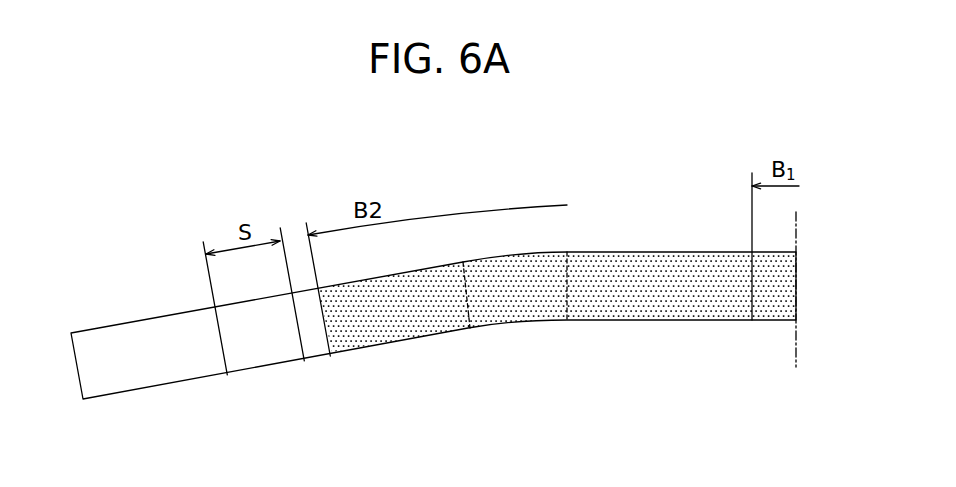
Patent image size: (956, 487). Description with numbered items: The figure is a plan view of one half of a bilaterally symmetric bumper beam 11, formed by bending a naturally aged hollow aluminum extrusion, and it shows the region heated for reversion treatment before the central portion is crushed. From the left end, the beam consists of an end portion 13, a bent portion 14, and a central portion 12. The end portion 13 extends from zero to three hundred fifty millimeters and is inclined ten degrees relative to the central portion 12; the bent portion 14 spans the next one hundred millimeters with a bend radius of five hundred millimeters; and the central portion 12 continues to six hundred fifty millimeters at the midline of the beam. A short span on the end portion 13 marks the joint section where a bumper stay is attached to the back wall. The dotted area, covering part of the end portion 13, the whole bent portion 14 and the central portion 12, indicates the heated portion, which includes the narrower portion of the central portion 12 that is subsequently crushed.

The bumper beam 11 is at (670, 188).
The central portion 12 is at (648, 308).
The end portion 13 is at (365, 343).
The bent portion 14 is at (515, 318).